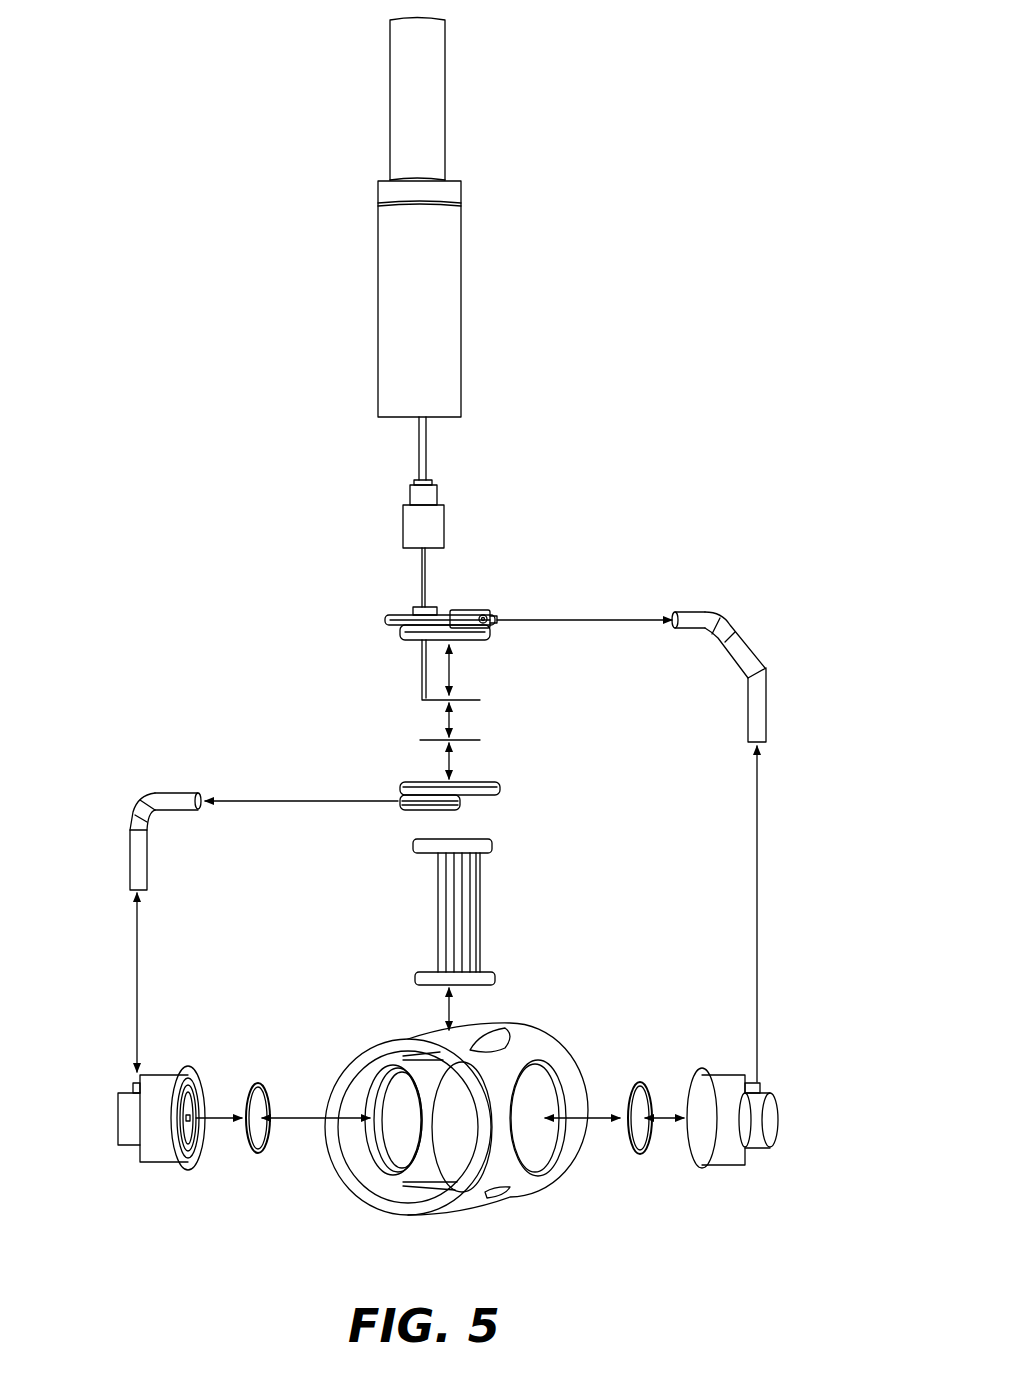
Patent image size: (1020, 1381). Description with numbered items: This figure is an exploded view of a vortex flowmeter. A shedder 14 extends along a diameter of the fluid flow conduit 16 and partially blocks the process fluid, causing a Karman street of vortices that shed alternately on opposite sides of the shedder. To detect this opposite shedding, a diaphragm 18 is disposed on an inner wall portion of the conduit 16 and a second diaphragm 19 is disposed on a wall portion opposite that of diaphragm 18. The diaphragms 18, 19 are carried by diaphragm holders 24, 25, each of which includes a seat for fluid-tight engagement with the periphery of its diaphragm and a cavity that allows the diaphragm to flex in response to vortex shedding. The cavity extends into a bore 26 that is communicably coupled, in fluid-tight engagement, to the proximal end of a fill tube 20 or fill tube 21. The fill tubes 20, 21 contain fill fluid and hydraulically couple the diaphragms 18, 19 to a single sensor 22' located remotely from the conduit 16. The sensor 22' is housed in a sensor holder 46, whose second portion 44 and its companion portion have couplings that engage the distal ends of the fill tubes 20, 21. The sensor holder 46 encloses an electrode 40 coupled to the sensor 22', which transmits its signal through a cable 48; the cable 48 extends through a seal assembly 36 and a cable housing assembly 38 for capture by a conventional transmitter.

The shedder 14 is at (468, 908).
The fluid flow conduit 16 is at (374, 1052).
The diaphragm 18 is at (258, 1084).
The diaphragm 19 is at (640, 1082).
The fill tube 20 is at (135, 870).
The fill tube 21 is at (765, 690).
The sensor 22' is at (402, 722).
The diaphragm holder 24 is at (162, 1078).
The diaphragm holder 25 is at (720, 1080).
The bore 26 is at (553, 1050).
The seal assembly 36 is at (437, 518).
The cable housing assembly 38 is at (455, 248).
The electrode 40 is at (423, 700).
The second portion 44 is at (465, 606).
The sensor holder 46 is at (495, 792).
The cable 48 is at (420, 575).